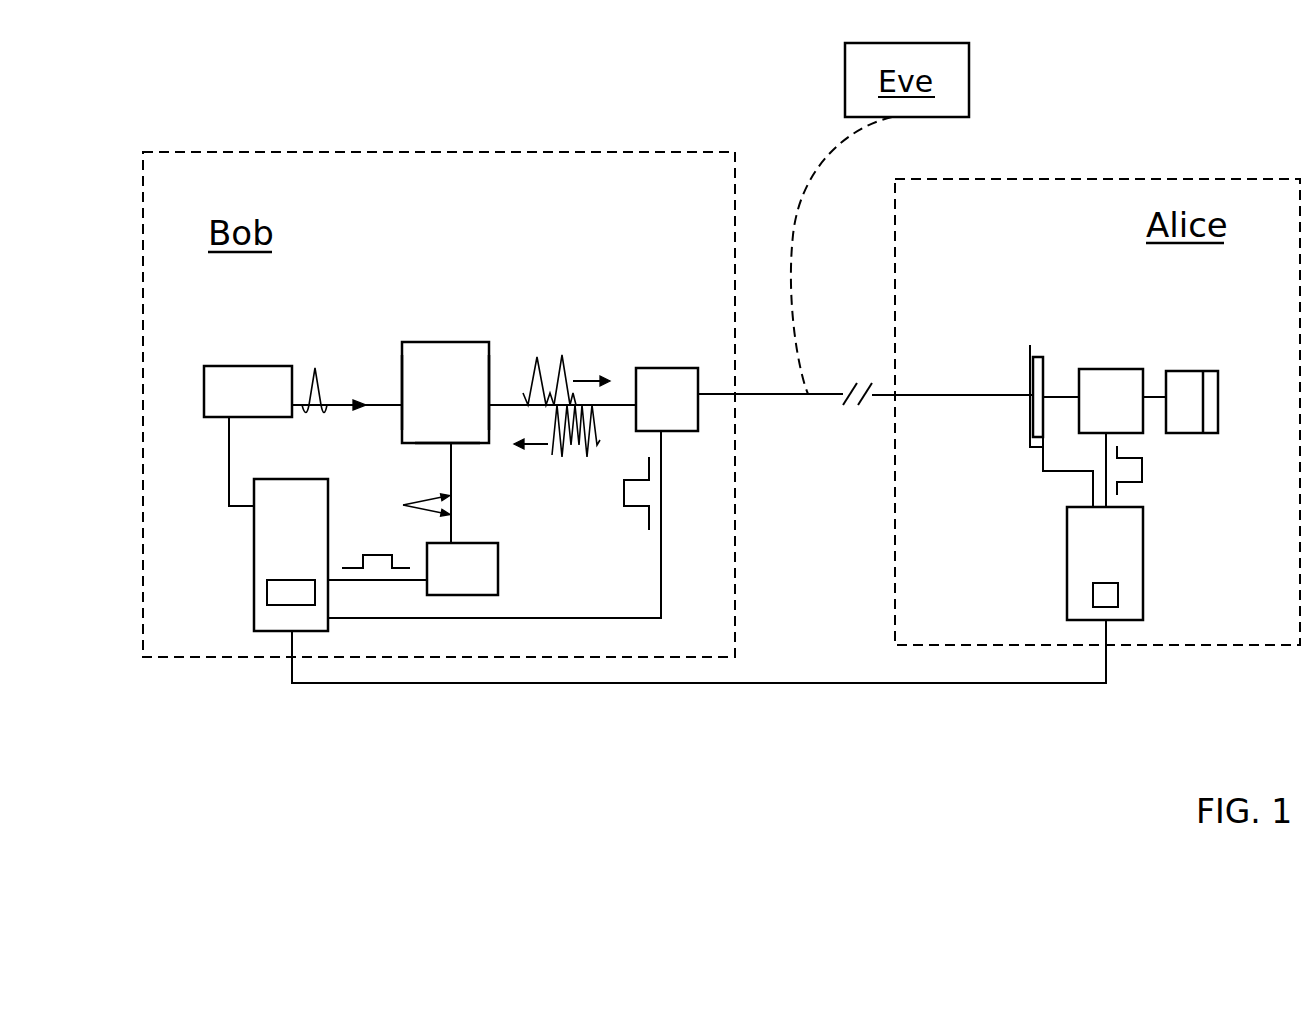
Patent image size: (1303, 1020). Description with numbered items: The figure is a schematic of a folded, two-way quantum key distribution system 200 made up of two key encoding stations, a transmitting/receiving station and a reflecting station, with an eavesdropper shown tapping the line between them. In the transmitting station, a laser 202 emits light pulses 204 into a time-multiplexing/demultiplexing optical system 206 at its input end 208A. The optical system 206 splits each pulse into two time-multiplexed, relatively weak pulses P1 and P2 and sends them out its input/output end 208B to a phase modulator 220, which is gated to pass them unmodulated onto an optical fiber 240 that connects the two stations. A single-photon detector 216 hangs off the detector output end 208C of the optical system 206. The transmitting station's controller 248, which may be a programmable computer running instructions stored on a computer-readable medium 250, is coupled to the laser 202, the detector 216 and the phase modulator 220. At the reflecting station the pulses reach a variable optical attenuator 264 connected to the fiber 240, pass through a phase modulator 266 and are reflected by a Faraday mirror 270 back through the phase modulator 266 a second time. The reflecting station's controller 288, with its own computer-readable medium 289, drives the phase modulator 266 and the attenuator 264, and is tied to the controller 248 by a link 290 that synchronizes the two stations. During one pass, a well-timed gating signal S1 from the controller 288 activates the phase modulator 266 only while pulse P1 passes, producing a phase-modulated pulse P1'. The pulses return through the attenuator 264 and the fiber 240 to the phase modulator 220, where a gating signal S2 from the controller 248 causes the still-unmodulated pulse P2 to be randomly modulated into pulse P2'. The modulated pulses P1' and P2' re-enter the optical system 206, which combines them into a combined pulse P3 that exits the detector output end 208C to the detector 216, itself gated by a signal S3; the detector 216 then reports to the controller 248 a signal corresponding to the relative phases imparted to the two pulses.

The folded QKD system 200 is at (505, 59).
The laser 202 is at (272, 408).
The light pulses 204 is at (315, 368).
The time-multiplexing/demultiplexing optical system 206 is at (468, 410).
The input end 208A is at (400, 377).
The input/output end 208B is at (490, 352).
The detector output end 208C is at (424, 445).
The single-photon detector 216 is at (488, 585).
The phase modulator 220 is at (692, 415).
The optical fiber 240 is at (783, 394).
The controller 248 is at (315, 570).
The computer-readable medium 250 is at (265, 593).
The variable optical attenuator 264 is at (1030, 345).
The phase modulator 266 is at (1135, 418).
The Faraday mirror 270 is at (1166, 382).
The controller 288 is at (1128, 578).
The computer-readable medium 289 is at (1118, 593).
The link 290 is at (462, 683).
The first time-multiplexed pulse P1 is at (624, 322).
The second time-multiplexed pulse P2 is at (571, 347).
The phase-modulated pulse P1' is at (539, 456).
The modulated pulse P2' is at (577, 467).
The combined pulse P3 is at (402, 507).
The gating signal S1 is at (1142, 470).
The gating signal S2 is at (646, 508).
The gating signal S3 is at (350, 568).